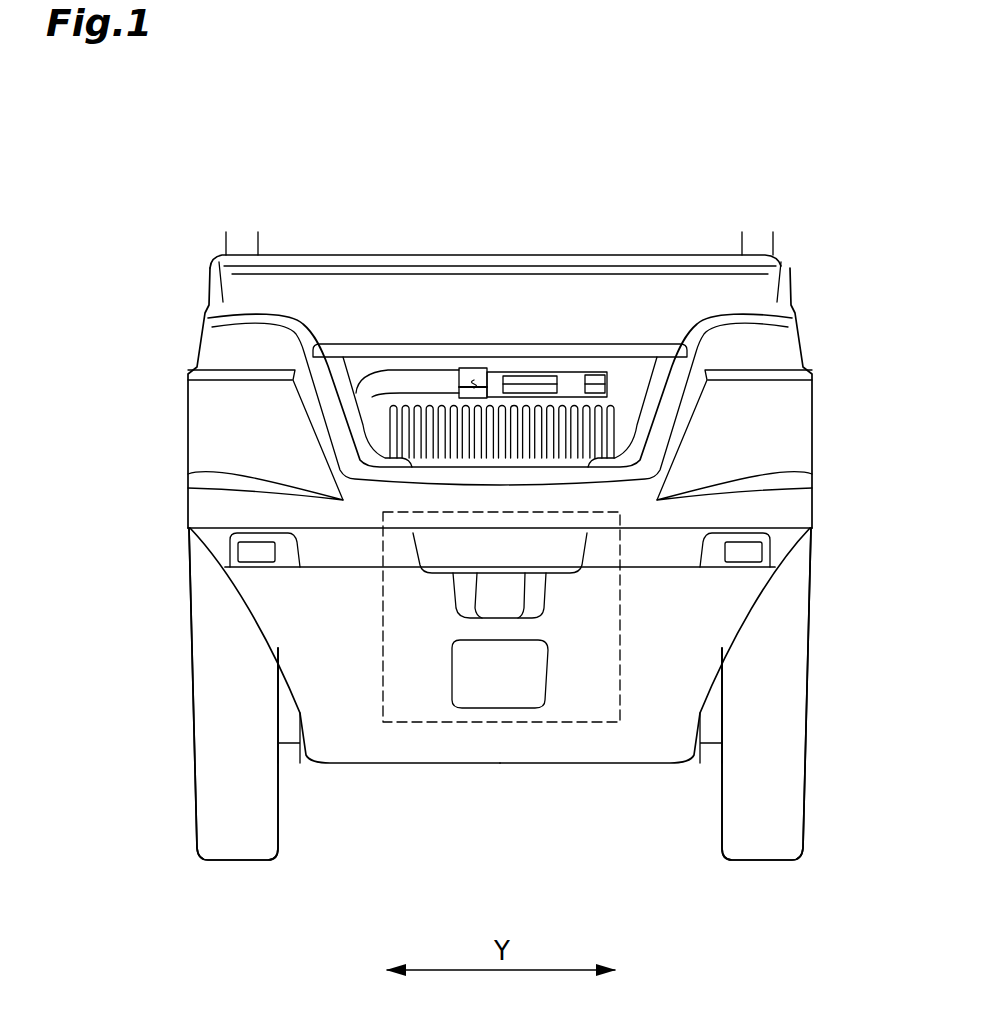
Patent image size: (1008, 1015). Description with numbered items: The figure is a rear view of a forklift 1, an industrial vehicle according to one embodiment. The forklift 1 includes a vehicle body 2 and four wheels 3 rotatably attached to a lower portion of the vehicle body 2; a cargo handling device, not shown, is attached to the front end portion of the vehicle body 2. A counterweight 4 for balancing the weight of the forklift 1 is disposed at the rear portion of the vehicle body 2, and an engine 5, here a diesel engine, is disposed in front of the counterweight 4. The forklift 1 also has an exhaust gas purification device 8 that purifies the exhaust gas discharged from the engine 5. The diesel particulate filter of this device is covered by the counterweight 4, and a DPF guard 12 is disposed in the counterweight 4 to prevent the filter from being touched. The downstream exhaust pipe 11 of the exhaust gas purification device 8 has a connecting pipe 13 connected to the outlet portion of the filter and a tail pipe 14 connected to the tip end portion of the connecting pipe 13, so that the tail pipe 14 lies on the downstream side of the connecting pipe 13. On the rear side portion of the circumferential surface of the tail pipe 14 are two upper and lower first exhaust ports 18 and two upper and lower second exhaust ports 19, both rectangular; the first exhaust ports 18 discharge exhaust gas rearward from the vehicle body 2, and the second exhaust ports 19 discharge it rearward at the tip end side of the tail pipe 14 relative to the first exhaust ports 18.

The forklift 1 is at (265, 152).
The vehicle body 2 is at (598, 247).
The wheels 3 is at (205, 673).
The counterweight 4 is at (477, 288).
The engine 5 is at (533, 722).
The exhaust gas purification device 8 is at (482, 326).
The downstream exhaust pipe 11 is at (376, 364).
The DPF guard 12 is at (616, 433).
The connecting pipe 13 is at (413, 385).
The tail pipe 14 is at (567, 380).
The first exhaust ports 18 is at (534, 373).
The second exhaust ports 19 is at (594, 372).